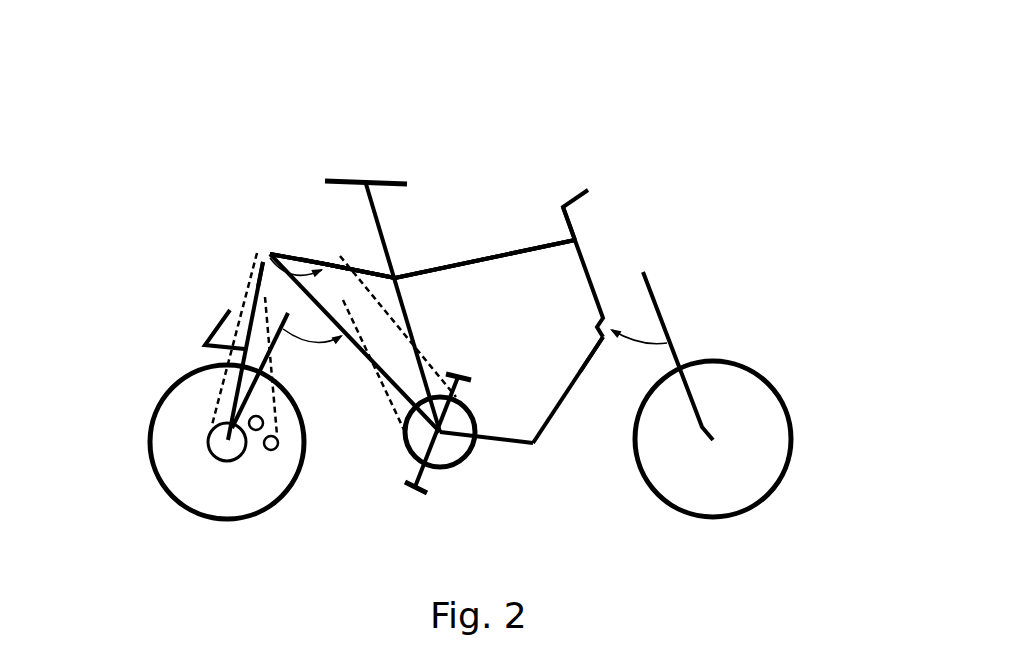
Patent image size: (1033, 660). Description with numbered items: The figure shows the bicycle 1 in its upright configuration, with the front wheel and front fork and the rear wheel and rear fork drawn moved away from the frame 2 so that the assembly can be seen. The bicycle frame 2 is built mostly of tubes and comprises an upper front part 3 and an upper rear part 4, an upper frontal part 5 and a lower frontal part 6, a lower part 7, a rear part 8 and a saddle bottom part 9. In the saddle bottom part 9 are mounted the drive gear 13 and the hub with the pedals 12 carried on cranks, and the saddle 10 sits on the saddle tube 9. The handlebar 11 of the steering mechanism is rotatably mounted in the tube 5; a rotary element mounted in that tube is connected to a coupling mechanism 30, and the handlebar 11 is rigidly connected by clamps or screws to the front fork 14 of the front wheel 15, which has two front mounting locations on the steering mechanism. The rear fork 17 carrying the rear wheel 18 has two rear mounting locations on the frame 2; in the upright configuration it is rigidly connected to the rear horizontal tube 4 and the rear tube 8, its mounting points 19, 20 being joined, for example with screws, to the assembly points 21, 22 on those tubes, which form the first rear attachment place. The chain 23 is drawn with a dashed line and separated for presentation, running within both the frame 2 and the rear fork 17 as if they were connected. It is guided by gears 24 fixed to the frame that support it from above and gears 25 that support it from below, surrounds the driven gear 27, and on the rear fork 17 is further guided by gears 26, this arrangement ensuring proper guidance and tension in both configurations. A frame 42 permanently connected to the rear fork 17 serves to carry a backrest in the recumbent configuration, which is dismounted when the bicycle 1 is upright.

The bicycle 1 is at (707, 206).
The bicycle frame 2 is at (516, 195).
The upper front part 3 is at (445, 266).
The upper rear part 4 is at (270, 254).
The upper frontal part 5 is at (588, 262).
The lower frontal part 6 is at (565, 397).
The lower part 7 is at (498, 440).
The rear part 8 is at (300, 557).
The saddle bottom part 9 is at (405, 275).
The saddle 10 is at (347, 181).
The handlebar 11 is at (575, 197).
The pedals 12 is at (428, 455).
The drive gear 13 is at (450, 468).
The front fork 14 is at (675, 348).
The front wheel 15 is at (790, 465).
The rear fork 17 is at (243, 356).
The rear wheel 18 is at (157, 472).
The mounting point 19 is at (265, 262).
The mounting point 20 is at (287, 313).
The assembly point 21 is at (325, 262).
The assembly point 22 is at (341, 340).
The chain 23 is at (387, 393).
The gears 24 is at (322, 228).
The gears 25 is at (337, 263).
The gears 26 is at (265, 450).
The driven gear 27 is at (213, 453).
The coupling mechanism 30 is at (608, 362).
The frame 42 is at (217, 327).